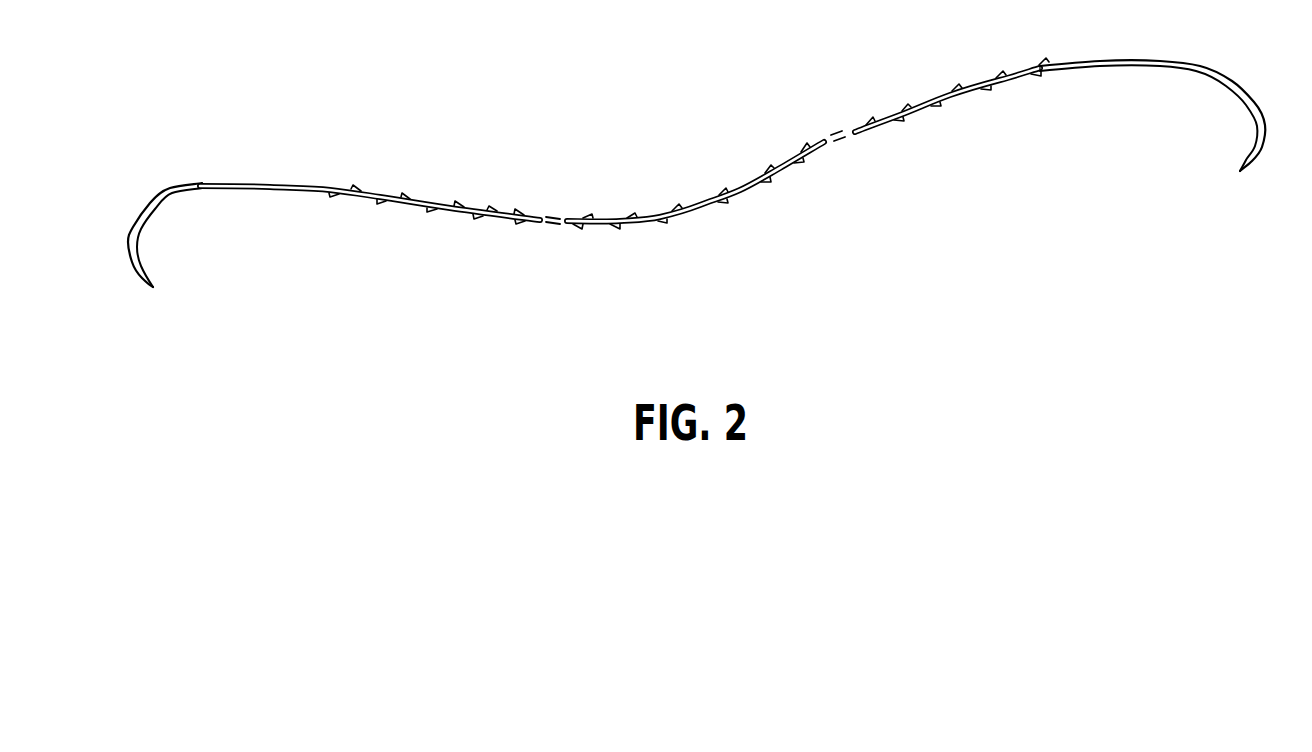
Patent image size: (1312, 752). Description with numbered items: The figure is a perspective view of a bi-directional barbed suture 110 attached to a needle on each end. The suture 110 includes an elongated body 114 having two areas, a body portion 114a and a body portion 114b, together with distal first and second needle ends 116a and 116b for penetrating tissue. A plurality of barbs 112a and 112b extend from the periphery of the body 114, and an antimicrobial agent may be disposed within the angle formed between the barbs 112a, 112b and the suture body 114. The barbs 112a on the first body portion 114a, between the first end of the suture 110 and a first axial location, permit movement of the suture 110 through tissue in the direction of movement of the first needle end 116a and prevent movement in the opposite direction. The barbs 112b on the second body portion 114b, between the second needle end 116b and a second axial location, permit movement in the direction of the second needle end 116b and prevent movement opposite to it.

The barbed suture 110 is at (692, 180).
The barbs 112a is at (487, 226).
The barbs 112b is at (947, 93).
The elongated body 114 is at (690, 205).
The body portion 114a is at (396, 198).
The body portion 114b is at (878, 122).
The first needle end 116a is at (136, 219).
The second needle end 116b is at (1252, 93).